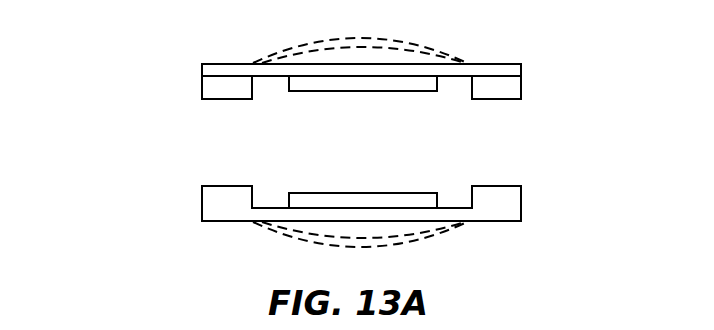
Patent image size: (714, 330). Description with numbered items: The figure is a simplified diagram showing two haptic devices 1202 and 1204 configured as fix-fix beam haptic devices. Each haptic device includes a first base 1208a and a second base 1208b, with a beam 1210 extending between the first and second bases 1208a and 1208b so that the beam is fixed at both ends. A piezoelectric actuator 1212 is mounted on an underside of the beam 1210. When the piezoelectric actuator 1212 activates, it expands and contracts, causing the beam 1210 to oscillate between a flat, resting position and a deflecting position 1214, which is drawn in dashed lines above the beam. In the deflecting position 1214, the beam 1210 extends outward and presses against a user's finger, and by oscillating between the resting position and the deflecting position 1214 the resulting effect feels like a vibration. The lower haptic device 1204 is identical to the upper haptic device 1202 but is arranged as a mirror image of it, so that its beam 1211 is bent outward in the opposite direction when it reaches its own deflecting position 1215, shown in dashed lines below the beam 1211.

The haptic device 1202 is at (333, 71).
The haptic device 1204 is at (290, 214).
The first base 1208a is at (227, 85).
The second base 1208b is at (500, 85).
The beam 1210 is at (308, 68).
The beam 1211 is at (288, 218).
The piezoelectric actuator 1212 is at (362, 84).
The deflecting position 1214 is at (437, 50).
The deflecting position 1215 is at (435, 235).